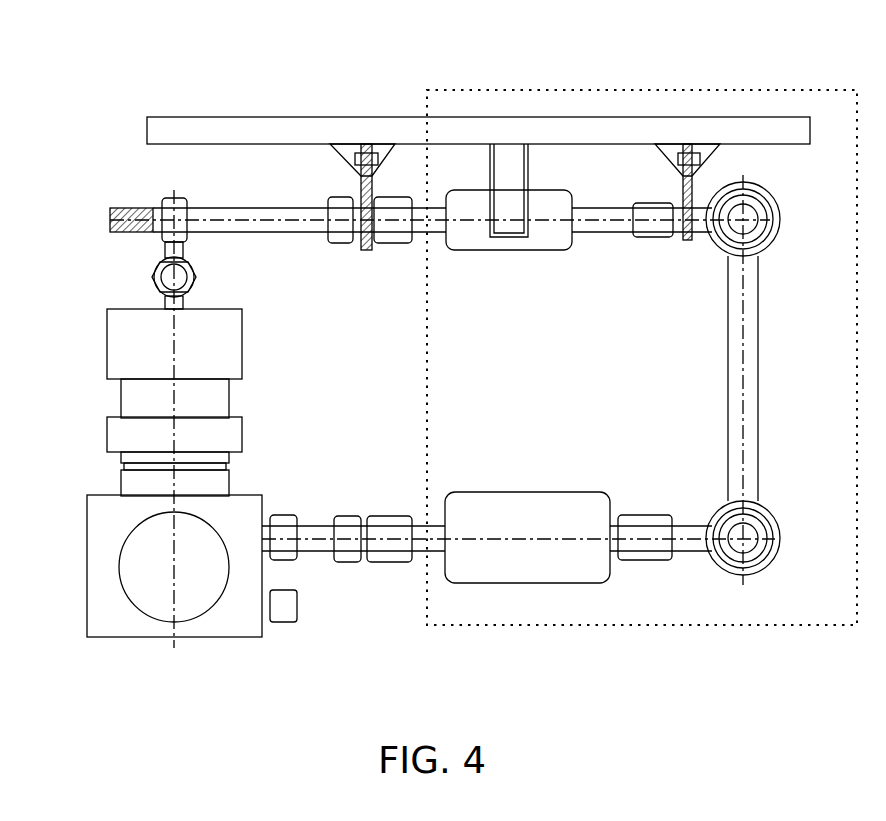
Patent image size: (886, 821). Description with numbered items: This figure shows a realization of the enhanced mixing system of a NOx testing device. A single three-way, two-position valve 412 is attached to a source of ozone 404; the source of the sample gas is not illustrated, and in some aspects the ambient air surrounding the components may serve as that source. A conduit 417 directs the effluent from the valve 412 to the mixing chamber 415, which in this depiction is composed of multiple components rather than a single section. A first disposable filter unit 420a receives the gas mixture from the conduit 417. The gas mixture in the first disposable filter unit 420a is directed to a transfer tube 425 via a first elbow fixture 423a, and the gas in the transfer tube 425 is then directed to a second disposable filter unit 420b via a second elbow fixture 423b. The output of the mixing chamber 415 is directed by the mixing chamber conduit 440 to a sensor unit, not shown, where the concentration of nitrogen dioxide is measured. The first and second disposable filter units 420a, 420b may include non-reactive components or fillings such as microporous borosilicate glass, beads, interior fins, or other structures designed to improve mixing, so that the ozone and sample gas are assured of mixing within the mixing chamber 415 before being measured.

The source of ozone 404 is at (86, 560).
The single 3/2 way valve 412 is at (243, 341).
The mixing chamber 415 is at (642, 90).
The conduit 417 is at (390, 516).
The first disposable filter unit 420a is at (538, 492).
The second disposable filter unit 420b is at (508, 251).
The first elbow fixture 423a is at (645, 515).
The second elbow fixture 423b is at (655, 238).
The transfer tube 425 is at (760, 378).
The mixing chamber conduit 440 is at (115, 207).